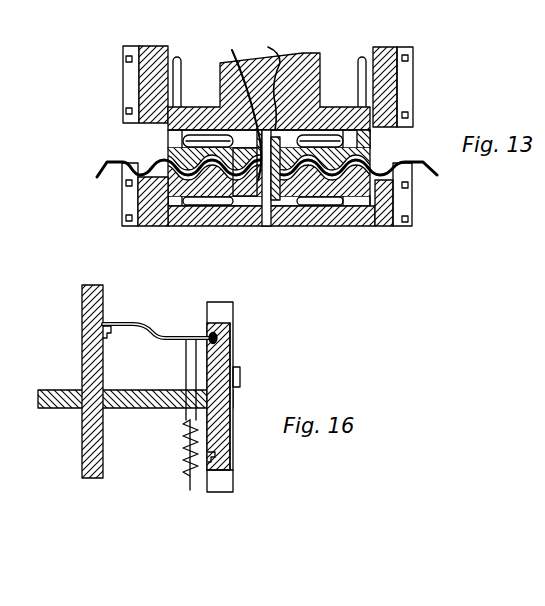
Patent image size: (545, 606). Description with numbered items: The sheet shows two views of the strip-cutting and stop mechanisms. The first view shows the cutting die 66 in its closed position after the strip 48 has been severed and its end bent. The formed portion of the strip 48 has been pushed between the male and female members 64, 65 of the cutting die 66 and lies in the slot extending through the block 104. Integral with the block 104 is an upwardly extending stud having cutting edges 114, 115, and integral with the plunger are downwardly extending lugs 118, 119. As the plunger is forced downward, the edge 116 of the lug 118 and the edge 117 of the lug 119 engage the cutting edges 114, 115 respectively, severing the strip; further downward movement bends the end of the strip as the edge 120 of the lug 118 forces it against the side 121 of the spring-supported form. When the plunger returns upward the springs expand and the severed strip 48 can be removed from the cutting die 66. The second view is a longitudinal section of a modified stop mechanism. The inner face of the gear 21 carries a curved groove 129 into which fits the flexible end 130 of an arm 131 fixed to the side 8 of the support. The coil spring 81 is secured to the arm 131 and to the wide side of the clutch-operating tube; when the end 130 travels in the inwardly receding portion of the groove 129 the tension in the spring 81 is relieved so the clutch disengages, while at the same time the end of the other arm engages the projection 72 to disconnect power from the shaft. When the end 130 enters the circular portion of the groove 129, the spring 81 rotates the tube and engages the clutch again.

In FIG. 13, the downwardly extending lug 118 is at (242, 246).
In FIG. 13, the downwardly extending lug 119 is at (265, 81).
In FIG. 13, the cutting die 66 is at (320, 108).
In FIG. 13, the strip 48 is at (107, 162).
In FIG. 13, the male member 64 is at (373, 152).
In FIG. 13, the female member 65 is at (380, 188).
In FIG. 13, the side of form 121 is at (173, 227).
In FIG. 13, the edge of lug 120 is at (235, 199).
In FIG. 13, the cutting edge of stud 114 is at (255, 186).
In FIG. 13, the edge of lug 116 is at (250, 190).
In FIG. 13, the block 104 is at (267, 182).
In FIG. 13, the edge of lug 117 is at (290, 192).
In FIG. 13, the cutting edge of stud 115 is at (276, 180).
In FIG. 16, the side of support 8 is at (82, 331).
In FIG. 16, the arm 131 is at (130, 324).
In FIG. 16, the flexible end of arm 130 is at (211, 338).
In FIG. 16, the gear 21 is at (230, 357).
In FIG. 16, the projection 72 is at (242, 371).
In FIG. 16, the coil spring 81 is at (183, 460).
In FIG. 16, the curved groove 129 is at (215, 458).